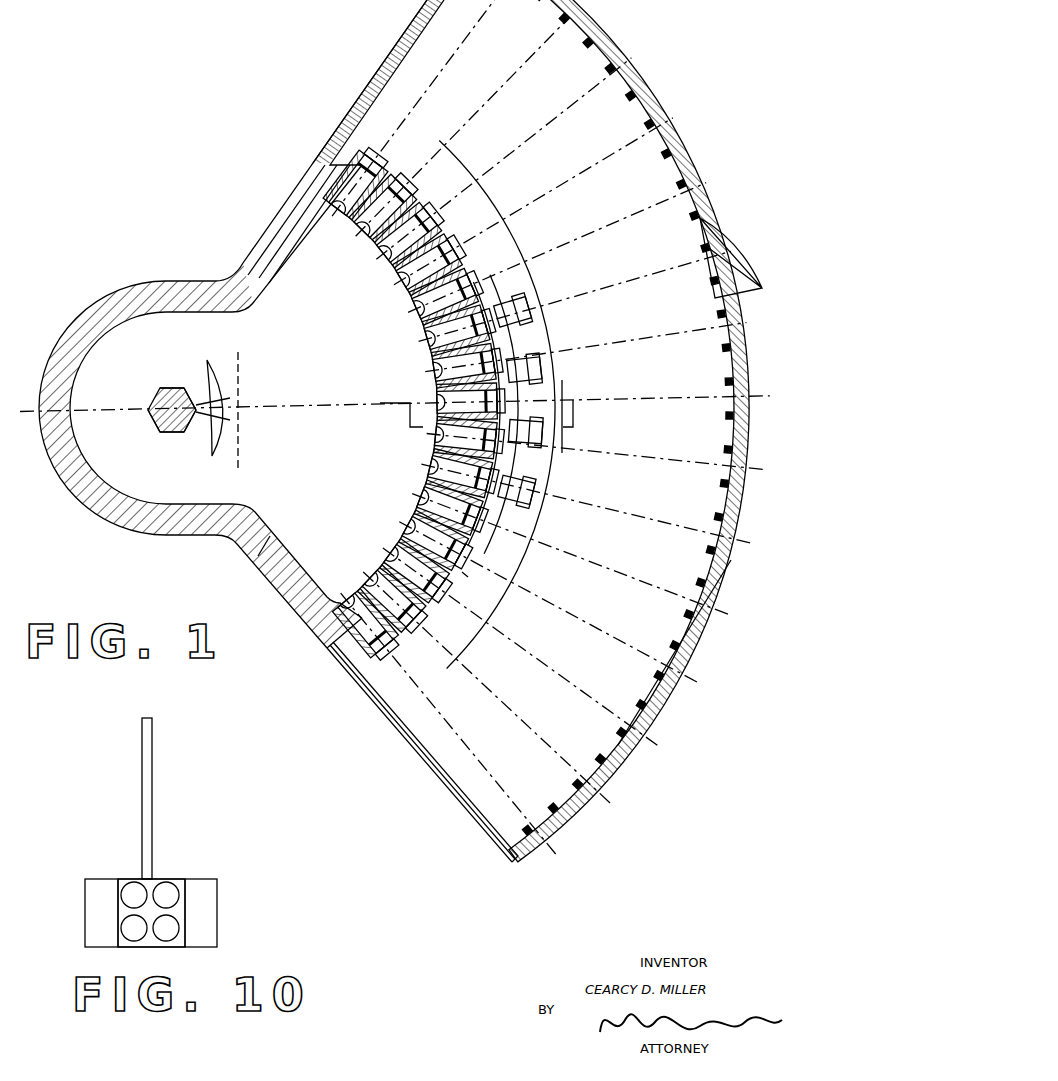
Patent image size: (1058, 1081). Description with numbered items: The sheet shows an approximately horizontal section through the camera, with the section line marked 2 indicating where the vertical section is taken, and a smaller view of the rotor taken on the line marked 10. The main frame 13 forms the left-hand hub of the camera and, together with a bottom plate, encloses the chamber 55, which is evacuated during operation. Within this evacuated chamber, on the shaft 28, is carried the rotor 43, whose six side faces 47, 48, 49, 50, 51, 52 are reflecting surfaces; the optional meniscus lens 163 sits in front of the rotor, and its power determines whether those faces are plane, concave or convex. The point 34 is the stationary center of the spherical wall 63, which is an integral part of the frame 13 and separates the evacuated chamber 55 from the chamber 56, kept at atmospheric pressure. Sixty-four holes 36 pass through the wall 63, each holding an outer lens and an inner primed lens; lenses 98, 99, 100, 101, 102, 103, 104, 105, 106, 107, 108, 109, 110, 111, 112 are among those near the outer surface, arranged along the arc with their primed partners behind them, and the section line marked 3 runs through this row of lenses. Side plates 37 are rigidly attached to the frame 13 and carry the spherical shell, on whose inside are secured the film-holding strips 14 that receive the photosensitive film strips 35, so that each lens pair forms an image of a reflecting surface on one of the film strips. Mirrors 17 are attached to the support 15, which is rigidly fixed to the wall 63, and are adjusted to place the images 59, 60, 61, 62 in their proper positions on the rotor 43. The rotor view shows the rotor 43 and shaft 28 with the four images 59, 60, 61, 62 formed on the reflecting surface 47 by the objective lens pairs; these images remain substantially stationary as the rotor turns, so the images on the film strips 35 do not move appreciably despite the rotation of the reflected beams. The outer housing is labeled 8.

In FIG. 1, the section line 2- 2 is at (29, 413).
In FIG. 1, the section line 3- 3 is at (445, 146).
In FIG. 1, the housing arc wall 8 is at (722, 594).
In FIG. 1, the section line 10- 10 is at (238, 369).
In FIG. 1, the main frame 13 is at (85, 315).
In FIG. 1, the film-holding strips 14 is at (760, 286).
In FIG. 1, the support 15 is at (535, 289).
In FIG. 1, the mirrors 17 is at (548, 302).
In FIG. 10, the shaft 28 is at (152, 766).
In FIG. 1, the point 34 is at (230, 420).
In FIG. 1, the photosensitive film strips 35 is at (714, 273).
In FIG. 1, the holes 36 is at (347, 176).
In FIG. 1, the side plates 37 is at (392, 60).
In FIG. 1, the rotor 43 is at (150, 404).
In FIG. 10, the rotor 43 is at (100, 878).
In FIG. 1, the side face 47 is at (230, 398).
In FIG. 10, the side face 47 is at (180, 908).
In FIG. 1, the side face 48 is at (186, 430).
In FIG. 10, the side face 48 is at (88, 912).
In FIG. 1, the side face 49 is at (160, 430).
In FIG. 1, the side face 50 is at (149, 416).
In FIG. 1, the side face 51 is at (165, 388).
In FIG. 1, the side face 52 is at (182, 388).
In FIG. 10, the side face 52 is at (207, 928).
In FIG. 1, the chamber 55 is at (258, 556).
In FIG. 1, the chamber 56 is at (668, 697).
In FIG. 10, the image 59 is at (132, 880).
In FIG. 10, the image 60 is at (128, 940).
In FIG. 10, the image 61 is at (170, 880).
In FIG. 10, the image 62 is at (170, 940).
In FIG. 1, the wall 63 is at (468, 577).
In FIG. 1, the lens 98 is at (397, 650).
In FIG. 1, the lens 99 is at (423, 620).
In FIG. 1, the lens 100 is at (450, 590).
In FIG. 1, the lens 101 is at (475, 552).
In FIG. 1, the lens 102 is at (490, 530).
In FIG. 1, the lens 103 is at (548, 474).
In FIG. 1, the lens 104 is at (548, 458).
In FIG. 1, the lens 105 is at (548, 390).
In FIG. 1, the lens 106 is at (540, 340).
In FIG. 1, the lens 107 is at (540, 320).
In FIG. 1, the lens 108 is at (474, 282).
In FIG. 1, the lens 109 is at (440, 255).
In FIG. 1, the lens 110 is at (418, 220).
In FIG. 1, the lens 111 is at (388, 195).
In FIG. 1, the lens 112 is at (370, 172).
In FIG. 1, the meniscus lens 163 is at (215, 372).